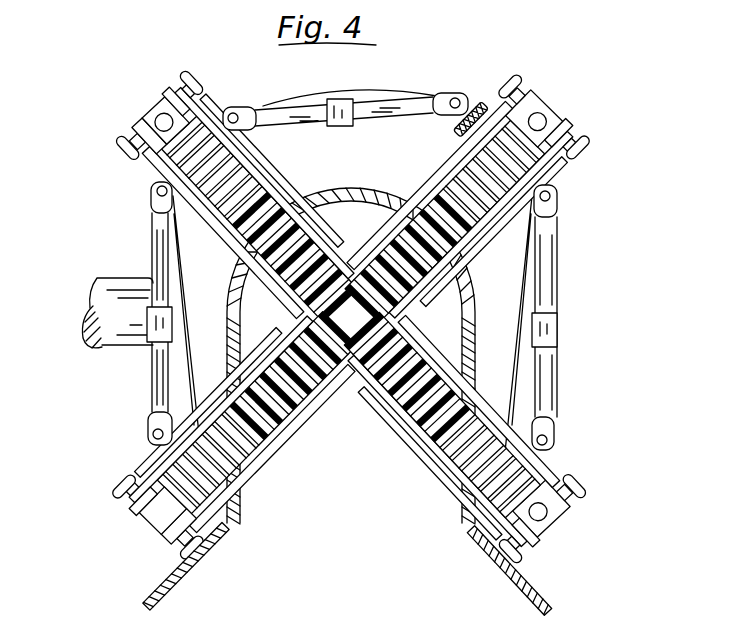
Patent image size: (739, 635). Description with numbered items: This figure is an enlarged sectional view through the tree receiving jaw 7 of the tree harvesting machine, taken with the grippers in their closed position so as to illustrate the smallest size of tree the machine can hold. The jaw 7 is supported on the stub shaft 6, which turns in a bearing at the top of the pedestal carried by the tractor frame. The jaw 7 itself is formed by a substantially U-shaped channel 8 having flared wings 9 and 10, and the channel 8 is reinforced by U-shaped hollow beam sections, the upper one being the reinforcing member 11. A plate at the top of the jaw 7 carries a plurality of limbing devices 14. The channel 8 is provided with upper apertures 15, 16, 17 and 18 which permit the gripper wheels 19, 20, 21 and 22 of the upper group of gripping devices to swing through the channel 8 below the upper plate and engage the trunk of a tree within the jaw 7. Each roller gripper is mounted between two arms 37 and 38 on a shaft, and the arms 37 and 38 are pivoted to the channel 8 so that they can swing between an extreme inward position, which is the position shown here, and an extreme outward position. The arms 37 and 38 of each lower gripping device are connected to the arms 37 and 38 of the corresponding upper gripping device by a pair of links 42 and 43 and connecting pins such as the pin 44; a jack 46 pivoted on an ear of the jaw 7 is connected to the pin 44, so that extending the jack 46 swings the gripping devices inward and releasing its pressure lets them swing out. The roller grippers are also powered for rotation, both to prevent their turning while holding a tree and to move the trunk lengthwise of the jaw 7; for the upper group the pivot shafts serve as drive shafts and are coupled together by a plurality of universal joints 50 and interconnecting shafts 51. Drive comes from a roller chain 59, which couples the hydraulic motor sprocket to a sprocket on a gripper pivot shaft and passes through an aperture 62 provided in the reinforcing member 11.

The stub shaft 6 is at (126, 285).
The tree receiving jaw 7 is at (329, 87).
The U-shaped channel 8 is at (246, 288).
The flared wing 9 is at (190, 570).
The flared wing 10 is at (503, 578).
The U-shaped hollow beam section 11 is at (362, 159).
The limbing device 14 is at (516, 40).
The upper aperture 15 is at (237, 386).
The upper aperture 16 is at (237, 262).
The upper aperture 17 is at (411, 207).
The upper aperture 18 is at (470, 386).
The gripper wheel 19 is at (287, 414).
The gripper wheel 20 is at (287, 196).
The gripper wheel 21 is at (462, 246).
The gripper wheel 22 is at (410, 428).
The arm 37 is at (140, 124).
The arm 38 is at (170, 88).
The link 42 is at (116, 144).
The link 43 is at (192, 78).
The connecting pin 44 is at (154, 112).
The jack 46 is at (148, 104).
The universal joint 50 is at (240, 106).
The interconnecting shaft 51 is at (130, 387).
The roller chain 59 is at (490, 100).
The aperture 62 is at (449, 134).